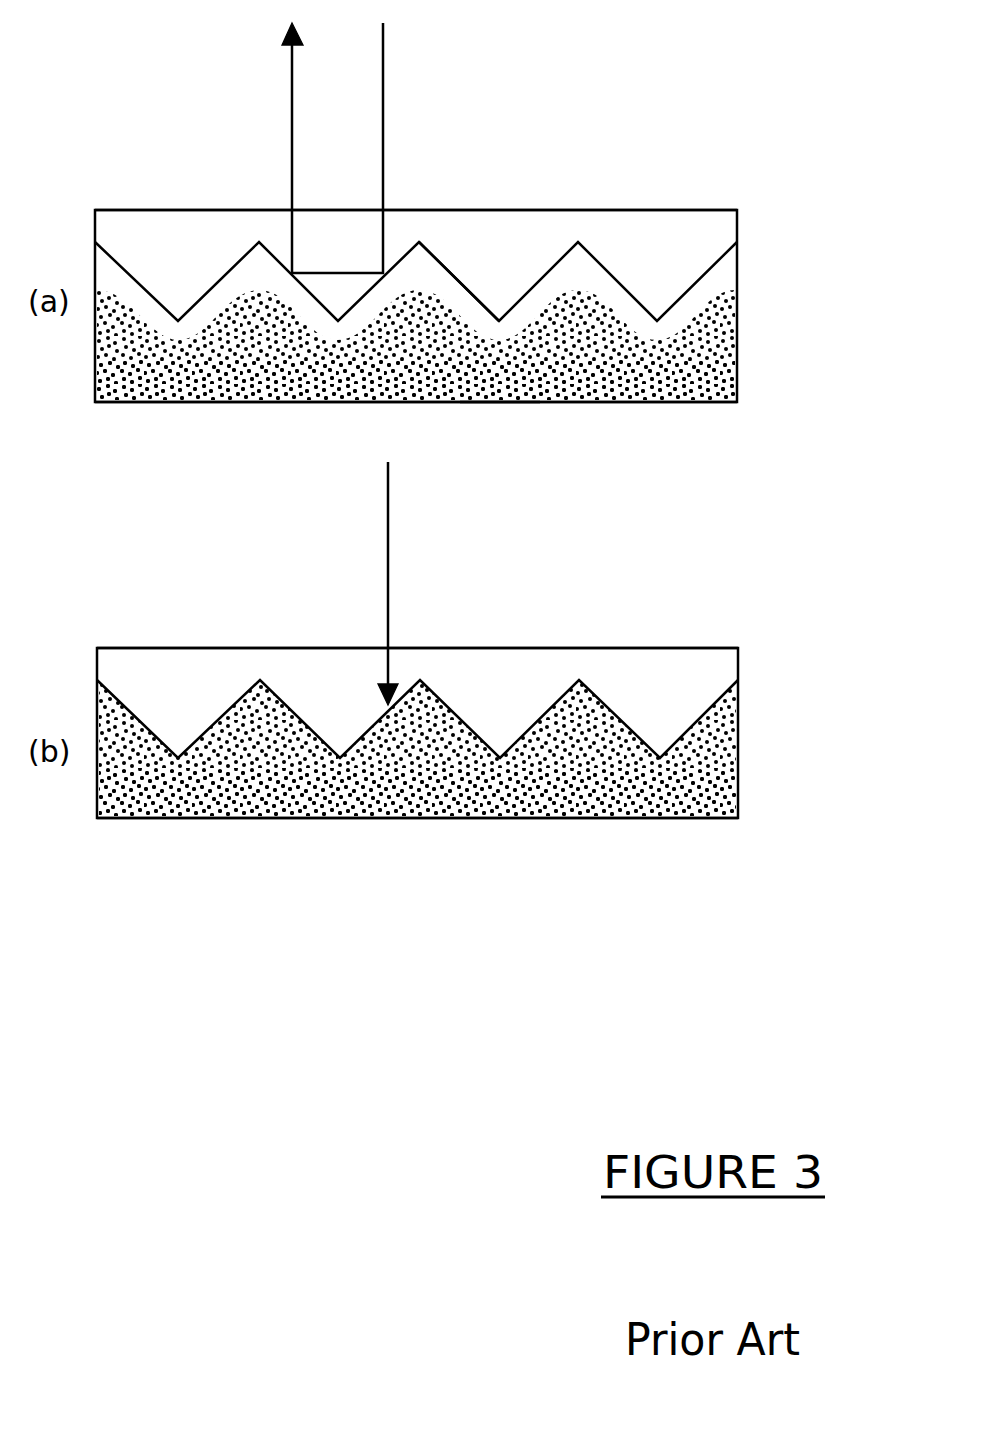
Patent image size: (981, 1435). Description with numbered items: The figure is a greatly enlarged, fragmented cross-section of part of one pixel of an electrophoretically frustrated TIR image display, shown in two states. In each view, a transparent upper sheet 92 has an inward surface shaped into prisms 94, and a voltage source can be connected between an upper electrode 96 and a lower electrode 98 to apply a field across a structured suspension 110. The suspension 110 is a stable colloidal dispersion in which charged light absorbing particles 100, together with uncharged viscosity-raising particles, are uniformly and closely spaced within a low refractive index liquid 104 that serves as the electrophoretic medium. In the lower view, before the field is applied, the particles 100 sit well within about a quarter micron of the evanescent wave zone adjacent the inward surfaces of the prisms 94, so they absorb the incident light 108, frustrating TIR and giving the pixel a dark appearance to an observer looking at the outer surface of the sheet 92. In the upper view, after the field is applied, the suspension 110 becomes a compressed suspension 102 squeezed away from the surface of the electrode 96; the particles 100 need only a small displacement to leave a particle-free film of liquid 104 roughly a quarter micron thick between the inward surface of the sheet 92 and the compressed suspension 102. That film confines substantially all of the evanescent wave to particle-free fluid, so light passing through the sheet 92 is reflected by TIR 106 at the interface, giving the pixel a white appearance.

In FIG. 3A, the sheet 92 is at (234, 196).
In FIG. 3B, the sheet 92 is at (357, 648).
In FIG. 3A, the prisms 94 is at (684, 244).
In FIG. 3B, the prisms 94 is at (737, 667).
In FIG. 3A, the upper electrode 96 is at (712, 262).
In FIG. 3B, the upper electrode 96 is at (554, 700).
In FIG. 3A, the lower electrode 98 is at (705, 402).
In FIG. 3B, the lower electrode 98 is at (437, 818).
In FIG. 3A, the particles 100 is at (712, 342).
In FIG. 3B, the particles 100 is at (713, 730).
In FIG. 3A, the compressed suspension 102 is at (497, 390).
In FIG. 3A, the low refractive index liquid 104 is at (448, 277).
In FIG. 3A, the TIR 106 is at (362, 148).
In FIG. 3B, the incident light 108 is at (366, 583).
In FIG. 3A, the suspension 110 is at (712, 363).
In FIG. 3B, the suspension 110 is at (723, 763).